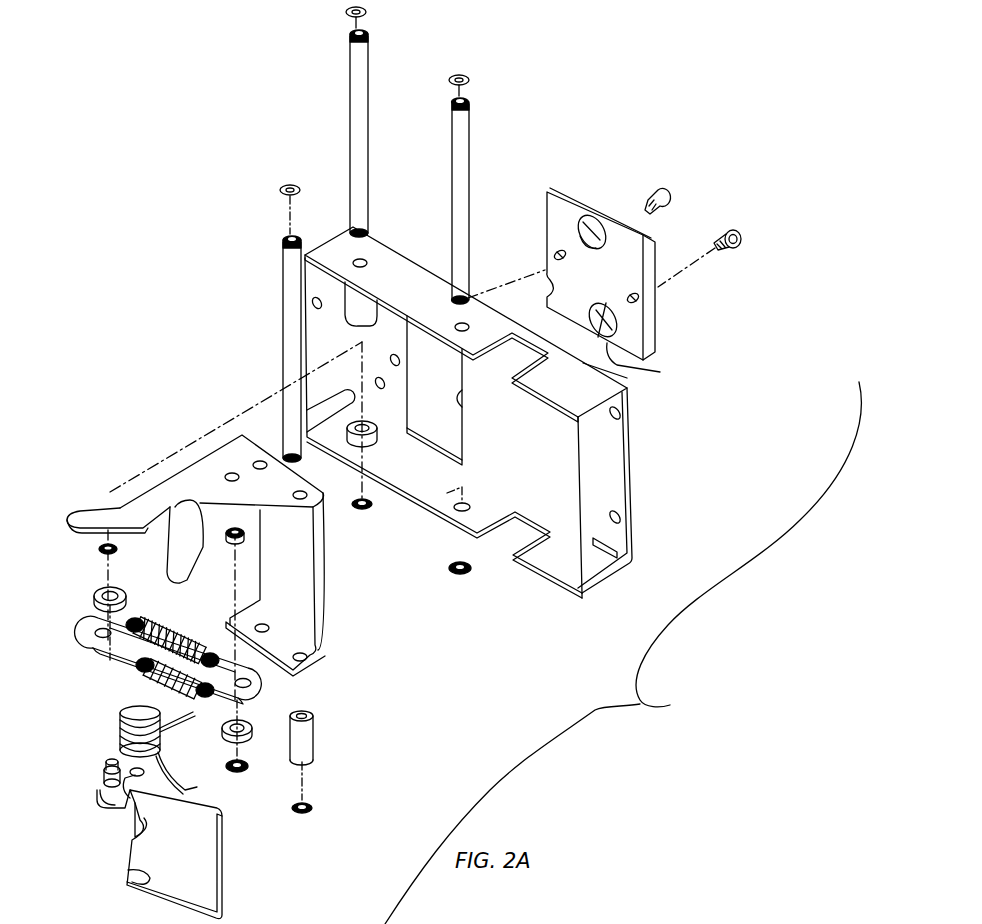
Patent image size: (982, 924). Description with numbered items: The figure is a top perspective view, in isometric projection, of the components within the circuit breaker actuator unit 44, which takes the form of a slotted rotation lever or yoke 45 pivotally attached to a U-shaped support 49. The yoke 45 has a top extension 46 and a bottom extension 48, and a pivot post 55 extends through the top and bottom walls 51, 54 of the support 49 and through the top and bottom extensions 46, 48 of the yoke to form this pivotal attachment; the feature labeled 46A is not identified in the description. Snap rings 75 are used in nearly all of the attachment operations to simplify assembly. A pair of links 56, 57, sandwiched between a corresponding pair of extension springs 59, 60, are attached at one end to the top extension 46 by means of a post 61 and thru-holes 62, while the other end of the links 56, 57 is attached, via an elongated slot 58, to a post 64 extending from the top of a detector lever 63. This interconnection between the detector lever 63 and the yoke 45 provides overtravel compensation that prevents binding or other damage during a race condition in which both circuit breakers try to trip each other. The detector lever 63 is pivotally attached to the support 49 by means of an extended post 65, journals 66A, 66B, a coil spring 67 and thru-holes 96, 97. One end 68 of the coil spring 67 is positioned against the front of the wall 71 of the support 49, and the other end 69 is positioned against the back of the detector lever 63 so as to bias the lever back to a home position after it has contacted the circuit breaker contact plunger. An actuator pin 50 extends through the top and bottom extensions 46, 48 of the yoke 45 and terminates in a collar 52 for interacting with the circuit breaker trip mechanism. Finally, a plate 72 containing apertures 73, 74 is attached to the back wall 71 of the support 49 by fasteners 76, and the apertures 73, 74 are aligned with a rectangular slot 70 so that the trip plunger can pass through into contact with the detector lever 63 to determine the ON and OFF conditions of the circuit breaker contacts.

The circuit breaker actuator unit 44 is at (652, 735).
The yoke 45 is at (181, 418).
The top extension 46 is at (193, 545).
The tongue 46A is at (116, 502).
The bottom extension 48 is at (215, 567).
The U-shaped support 49 is at (512, 421).
The actuator pin 50 is at (282, 318).
The top wall 51 is at (373, 254).
The collar 52 is at (313, 748).
The bottom wall 54 is at (595, 590).
The pivot post 55 is at (470, 178).
The link 56 is at (88, 631).
The link 57 is at (92, 653).
The elongated slot 58 is at (126, 619).
The extension spring 59 is at (170, 630).
The extension spring 60 is at (140, 675).
The post 61 is at (247, 540).
The thru-holes 62 is at (245, 675).
The detector lever 63 is at (158, 839).
The post 64 is at (99, 777).
The extended post 65 is at (372, 118).
The journal 66A is at (385, 320).
The journal 66B is at (377, 442).
The coil spring 67 is at (119, 727).
The end of coil spring 68 is at (193, 716).
The end of coil spring 69 is at (188, 793).
The rectangular slot 70 is at (468, 403).
The back wall 71 is at (635, 472).
The plate 72 is at (617, 269).
The aperture 73 is at (595, 250).
The aperture 74 is at (639, 370).
The snap rings 75 is at (307, 812).
The fasteners 76 is at (740, 242).
The thru-hole 96 is at (152, 798).
The thru-hole 97 is at (134, 874).